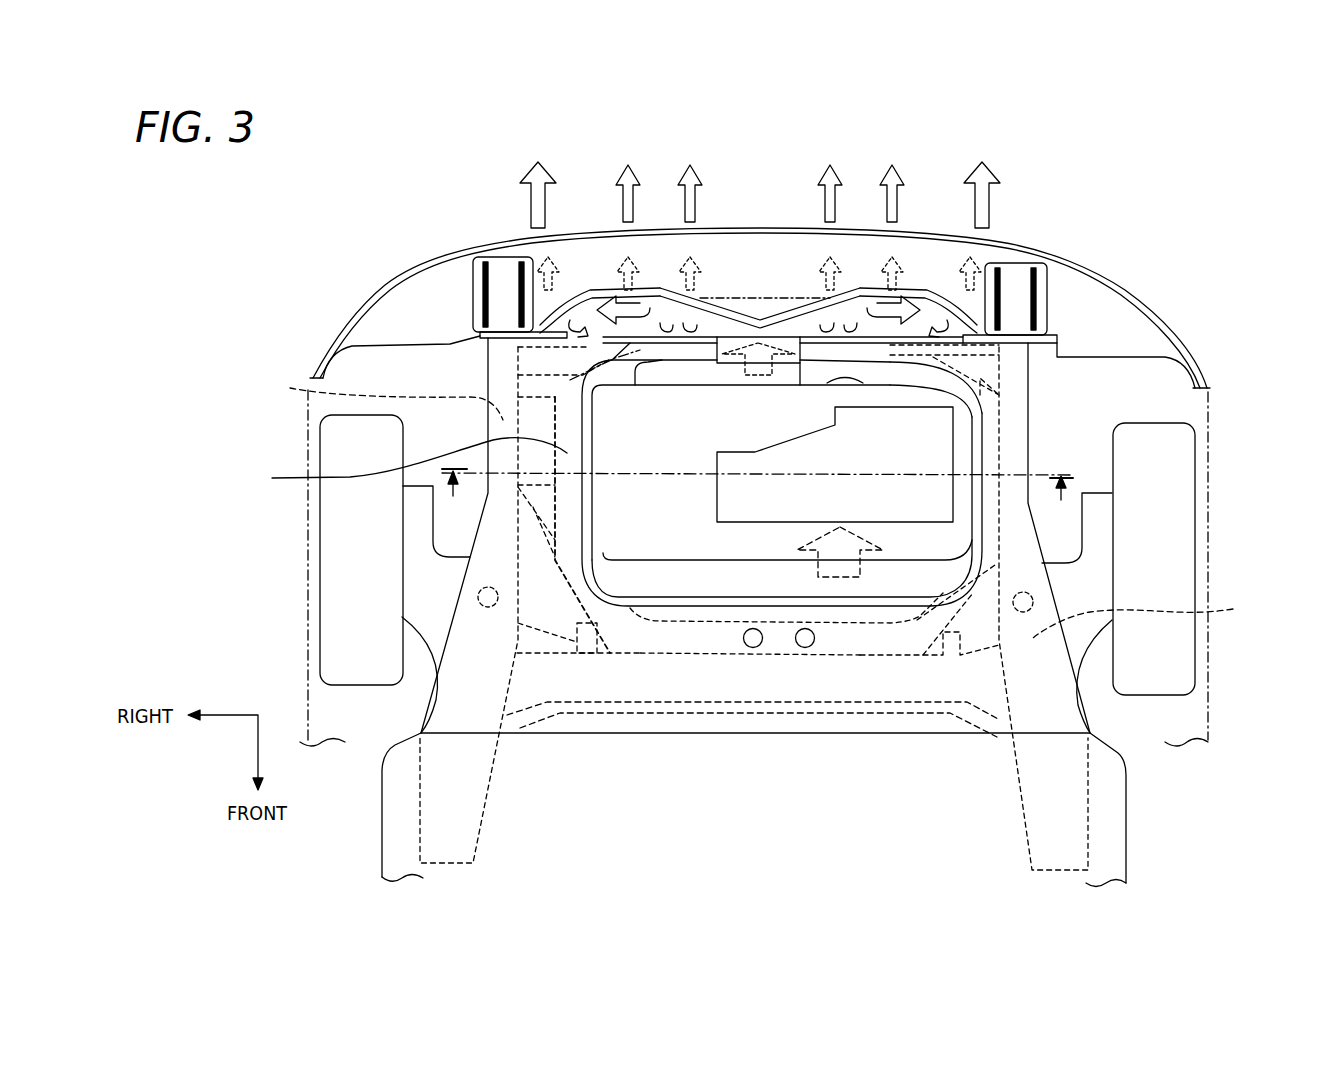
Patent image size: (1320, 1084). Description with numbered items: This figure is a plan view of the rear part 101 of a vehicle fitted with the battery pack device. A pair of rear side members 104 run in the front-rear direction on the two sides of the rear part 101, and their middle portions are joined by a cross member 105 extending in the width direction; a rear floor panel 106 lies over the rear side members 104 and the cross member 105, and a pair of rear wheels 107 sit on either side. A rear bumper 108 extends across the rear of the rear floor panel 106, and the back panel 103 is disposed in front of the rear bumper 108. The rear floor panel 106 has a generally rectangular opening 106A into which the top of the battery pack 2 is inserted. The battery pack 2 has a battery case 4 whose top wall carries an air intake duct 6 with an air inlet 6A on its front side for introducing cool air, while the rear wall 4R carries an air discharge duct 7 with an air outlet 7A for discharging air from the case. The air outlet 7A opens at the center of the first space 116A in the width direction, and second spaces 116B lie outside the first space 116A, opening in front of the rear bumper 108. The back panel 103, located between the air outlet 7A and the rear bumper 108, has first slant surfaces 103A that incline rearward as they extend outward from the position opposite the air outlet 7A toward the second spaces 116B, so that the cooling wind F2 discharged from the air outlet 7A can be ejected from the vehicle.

The rear part 101 is at (1146, 259).
The rear bumper 108 is at (1022, 248).
The second spaces 116B is at (557, 307).
The cooling wind F2 is at (655, 290).
The first slant surfaces 103A is at (700, 303).
The air outlet 7A is at (755, 323).
The first space 116A is at (770, 317).
The back panel 103 is at (857, 293).
The rear side members 104 is at (761, 505).
The battery case 4 is at (630, 425).
The air discharge duct 7 is at (712, 375).
The rear wall 4R is at (861, 390).
The rear floor panel 106 is at (404, 464).
The opening 106A is at (972, 402).
The air intake duct 6 is at (743, 485).
The battery pack 2 is at (973, 447).
The rear wheels 107 is at (320, 580).
The air inlet 6A is at (892, 525).
The cross member 105 is at (755, 703).